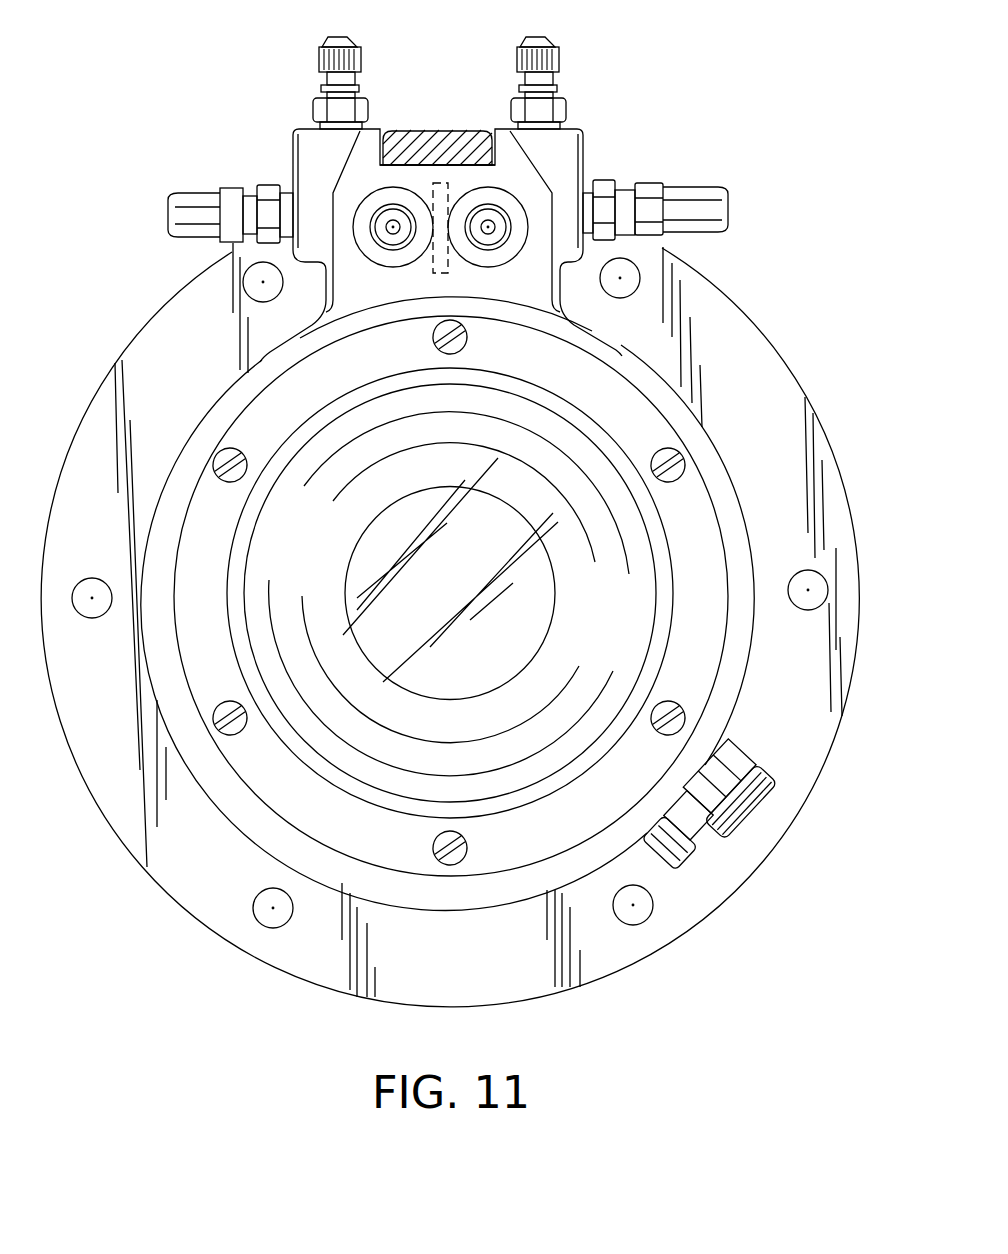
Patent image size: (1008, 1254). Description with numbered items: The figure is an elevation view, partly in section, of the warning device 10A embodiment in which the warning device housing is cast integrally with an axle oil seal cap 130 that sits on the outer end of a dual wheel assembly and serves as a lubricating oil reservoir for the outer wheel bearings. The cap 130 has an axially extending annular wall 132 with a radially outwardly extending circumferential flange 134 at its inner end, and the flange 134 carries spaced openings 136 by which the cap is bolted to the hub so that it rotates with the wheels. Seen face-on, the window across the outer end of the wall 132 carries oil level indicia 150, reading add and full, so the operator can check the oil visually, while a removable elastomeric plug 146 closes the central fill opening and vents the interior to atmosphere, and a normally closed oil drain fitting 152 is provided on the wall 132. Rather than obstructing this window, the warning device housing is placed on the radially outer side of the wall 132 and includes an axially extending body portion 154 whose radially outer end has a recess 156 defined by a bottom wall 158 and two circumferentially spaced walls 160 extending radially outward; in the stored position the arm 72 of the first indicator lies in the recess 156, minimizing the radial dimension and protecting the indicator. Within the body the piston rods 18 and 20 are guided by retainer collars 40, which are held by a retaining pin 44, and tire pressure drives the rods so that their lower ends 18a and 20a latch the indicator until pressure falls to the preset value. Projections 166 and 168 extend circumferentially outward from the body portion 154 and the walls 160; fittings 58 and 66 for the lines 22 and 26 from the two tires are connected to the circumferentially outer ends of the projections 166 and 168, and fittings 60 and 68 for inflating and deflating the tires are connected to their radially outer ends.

The warning device 10A is at (677, 170).
The piston rod 18 is at (489, 213).
The lower end of rod 18a is at (489, 233).
The piston rod 20 is at (390, 217).
The lower end of rod 20a is at (391, 235).
The line 22 is at (710, 188).
The line 26 is at (183, 205).
The retainer collar 40 is at (391, 258).
The retaining pin 44 is at (441, 273).
The fitting 58 is at (618, 188).
The fitting 60 is at (560, 102).
The fitting 66 is at (272, 188).
The fitting 68 is at (317, 107).
The arm 72 is at (427, 147).
The axle oil seal cap 130 is at (758, 304).
The annular wall 132 is at (752, 645).
The circumferential flange 134 is at (140, 817).
The openings 136 is at (273, 908).
The removable plug 146 is at (432, 585).
The oil level indicia 150 is at (568, 621).
The oil drain fitting 152 is at (710, 871).
The body portion 154 is at (342, 257).
The recess 156 is at (388, 110).
The bottom wall 158 is at (462, 163).
The walls 160 is at (293, 138).
The projection 166 is at (578, 126).
The projection 168 is at (307, 130).